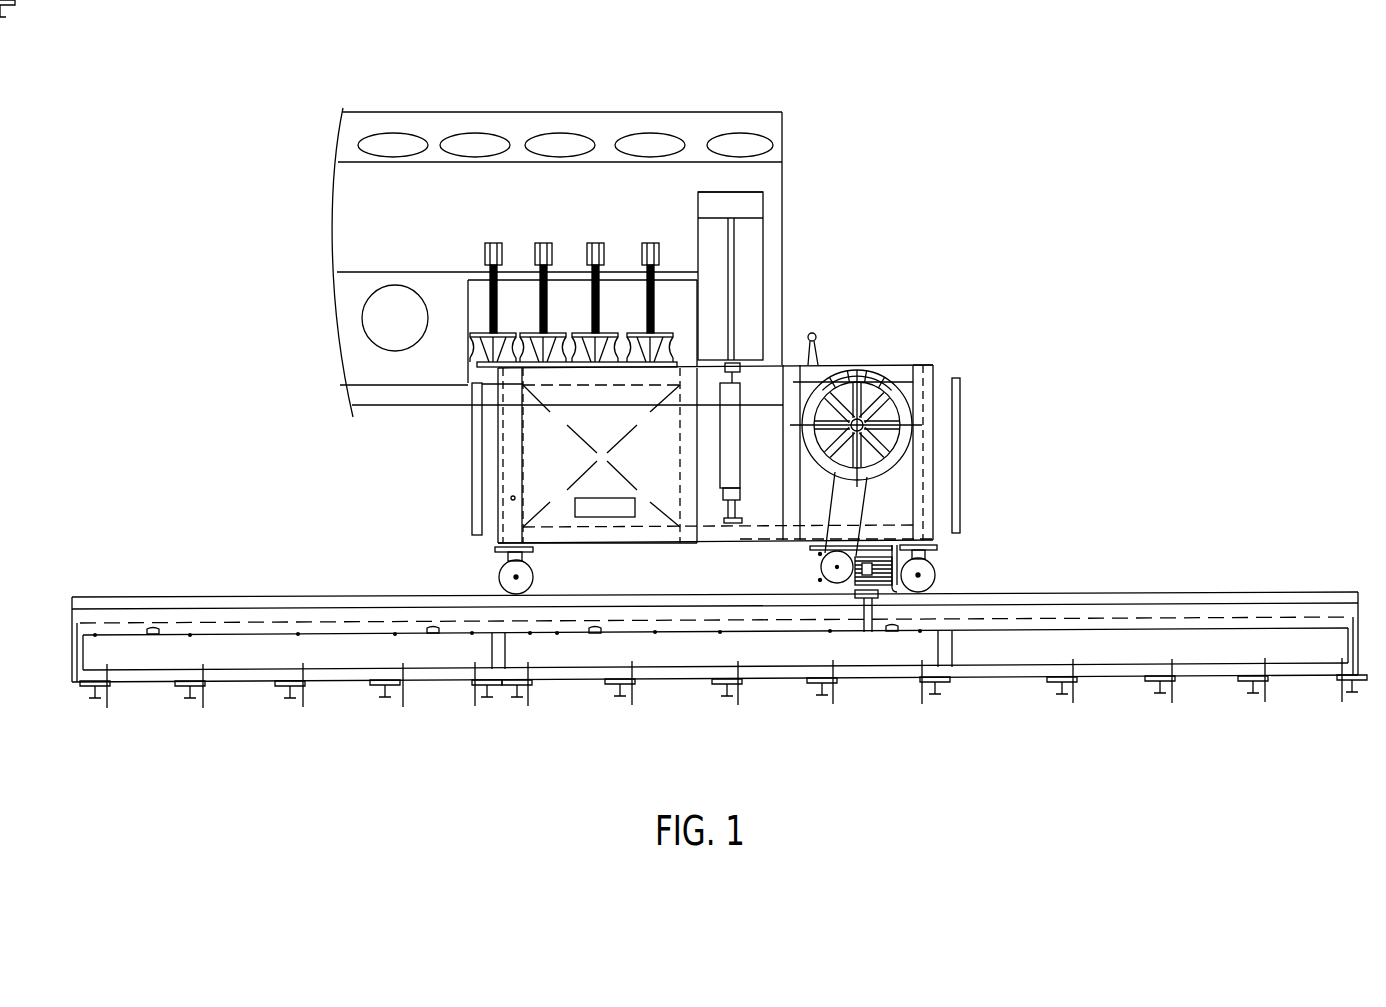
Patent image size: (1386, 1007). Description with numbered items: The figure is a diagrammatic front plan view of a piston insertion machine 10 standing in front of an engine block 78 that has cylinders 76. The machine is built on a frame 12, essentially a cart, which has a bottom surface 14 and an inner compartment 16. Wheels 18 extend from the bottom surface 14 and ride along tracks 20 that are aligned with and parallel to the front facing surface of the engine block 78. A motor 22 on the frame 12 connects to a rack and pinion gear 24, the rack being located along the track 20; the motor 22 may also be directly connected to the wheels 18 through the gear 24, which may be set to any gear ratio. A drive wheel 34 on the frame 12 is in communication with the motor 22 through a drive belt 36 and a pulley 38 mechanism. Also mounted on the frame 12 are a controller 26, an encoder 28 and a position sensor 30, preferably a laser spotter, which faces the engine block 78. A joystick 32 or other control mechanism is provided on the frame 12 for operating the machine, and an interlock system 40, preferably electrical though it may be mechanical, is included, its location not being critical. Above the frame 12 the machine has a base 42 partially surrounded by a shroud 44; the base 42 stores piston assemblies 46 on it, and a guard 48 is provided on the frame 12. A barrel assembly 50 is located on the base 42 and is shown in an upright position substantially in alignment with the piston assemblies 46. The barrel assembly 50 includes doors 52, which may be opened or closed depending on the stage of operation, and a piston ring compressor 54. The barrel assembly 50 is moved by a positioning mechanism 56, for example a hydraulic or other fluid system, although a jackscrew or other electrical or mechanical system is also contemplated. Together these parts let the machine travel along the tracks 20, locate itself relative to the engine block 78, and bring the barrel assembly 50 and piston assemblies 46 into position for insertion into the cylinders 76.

The piston insertion machine 10 is at (990, 430).
The frame 12 is at (938, 483).
The bottom surface 14 is at (556, 546).
The inner compartment 16 is at (658, 473).
The wheels 18 is at (936, 576).
The tracks 20 is at (1103, 608).
The motor 22 is at (883, 588).
The rack and pinion gear 24 is at (868, 605).
The controller 26 is at (607, 510).
The encoder 28 is at (842, 588).
The position sensor 30 is at (511, 497).
The joystick 32 is at (817, 337).
The drive wheel 34 is at (905, 387).
The drive belt 36 is at (822, 490).
The pulley 38 is at (821, 572).
The interlock system 40 is at (508, 572).
The base 42 is at (898, 366).
The shroud 44 is at (472, 380).
The piston assemblies 46 is at (486, 247).
The guard 48 is at (482, 534).
The barrel assembly 50 is at (765, 273).
The doors 52 is at (753, 287).
The piston ring compressor 54 is at (763, 207).
The positioning mechanism 56 is at (720, 465).
The cylinders 76 is at (373, 311).
The engine block 78 is at (762, 182).